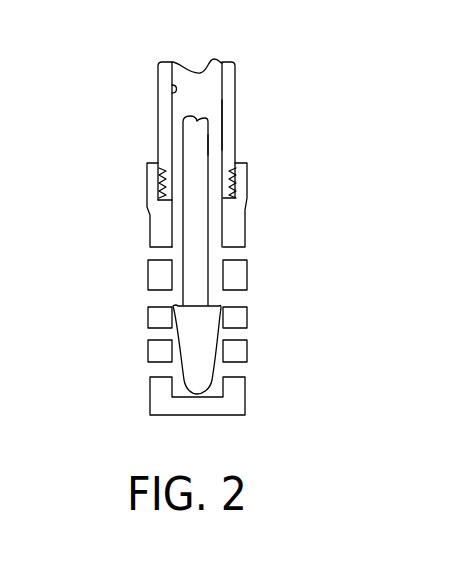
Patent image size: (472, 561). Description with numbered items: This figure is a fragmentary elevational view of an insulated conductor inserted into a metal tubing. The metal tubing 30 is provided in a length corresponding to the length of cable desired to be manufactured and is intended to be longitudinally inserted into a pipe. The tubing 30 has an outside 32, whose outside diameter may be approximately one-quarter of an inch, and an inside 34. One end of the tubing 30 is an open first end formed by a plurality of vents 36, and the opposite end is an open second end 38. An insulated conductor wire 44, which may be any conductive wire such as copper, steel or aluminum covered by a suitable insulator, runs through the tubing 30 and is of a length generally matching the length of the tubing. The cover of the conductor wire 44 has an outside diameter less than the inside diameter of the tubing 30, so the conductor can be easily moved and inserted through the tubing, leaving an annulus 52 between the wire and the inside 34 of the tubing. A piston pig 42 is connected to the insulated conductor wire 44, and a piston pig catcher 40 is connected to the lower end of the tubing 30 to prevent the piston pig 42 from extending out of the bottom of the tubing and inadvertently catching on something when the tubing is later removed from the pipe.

The metal tubing 30 is at (235, 127).
The outside 32 is at (235, 86).
The inside 34 is at (178, 93).
The vents 36 is at (248, 252).
The open second end 38 is at (208, 64).
The piston pig catcher 40 is at (150, 398).
The piston pig 42 is at (197, 347).
The insulated conductor wire 44 is at (205, 177).
The annulus 52 is at (212, 145).